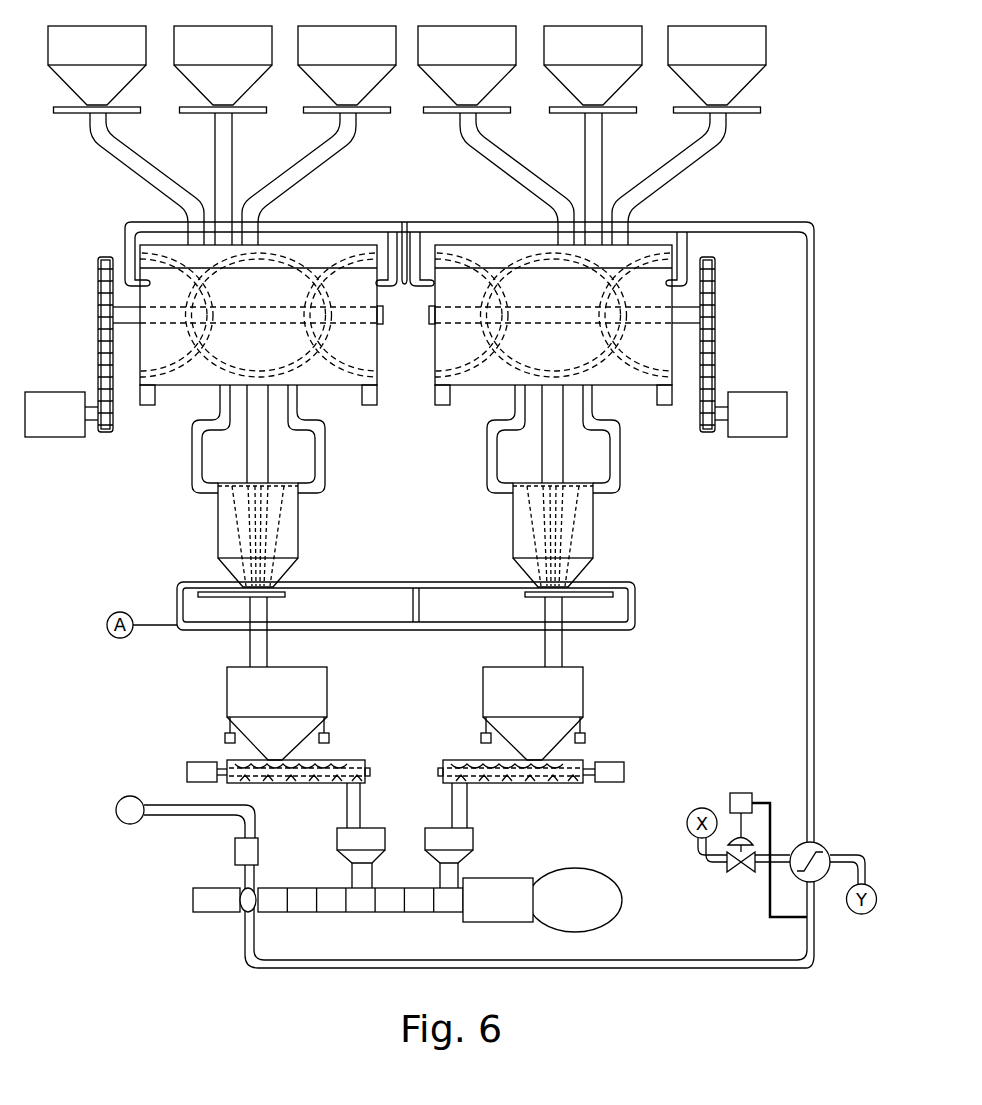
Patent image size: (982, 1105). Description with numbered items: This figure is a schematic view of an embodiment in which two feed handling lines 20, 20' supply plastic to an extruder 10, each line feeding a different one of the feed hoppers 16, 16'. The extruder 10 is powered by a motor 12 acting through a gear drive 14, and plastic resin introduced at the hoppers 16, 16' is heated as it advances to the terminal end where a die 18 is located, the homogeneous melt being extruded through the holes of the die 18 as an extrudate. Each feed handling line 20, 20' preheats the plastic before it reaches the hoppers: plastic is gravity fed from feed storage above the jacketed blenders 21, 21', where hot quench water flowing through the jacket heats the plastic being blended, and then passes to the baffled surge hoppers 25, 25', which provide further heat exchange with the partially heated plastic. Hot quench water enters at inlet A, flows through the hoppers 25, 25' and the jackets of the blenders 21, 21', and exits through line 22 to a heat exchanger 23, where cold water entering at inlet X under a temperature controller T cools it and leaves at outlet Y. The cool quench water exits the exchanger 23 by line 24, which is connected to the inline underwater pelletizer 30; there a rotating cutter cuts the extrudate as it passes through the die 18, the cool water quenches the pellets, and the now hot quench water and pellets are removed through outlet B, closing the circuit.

The extruder 10 is at (375, 945).
The motor 12 is at (582, 898).
The gear drive 14 is at (512, 898).
The feed hopper 16 is at (488, 835).
The feed hopper 16' is at (331, 835).
The die 18 is at (260, 903).
The feed handling equipment 20 is at (574, 346).
The feed handling equipment 20' is at (235, 346).
The jacketed blender 21 is at (574, 369).
The jacketed blender 21' is at (237, 369).
The line 22 is at (816, 580).
The heat exchanger 23 is at (818, 842).
The line 24 is at (678, 968).
The baffled surge hopper 25 is at (590, 575).
The baffled surge hopper 25' is at (220, 575).
The underwater pelletizer 30 is at (215, 955).